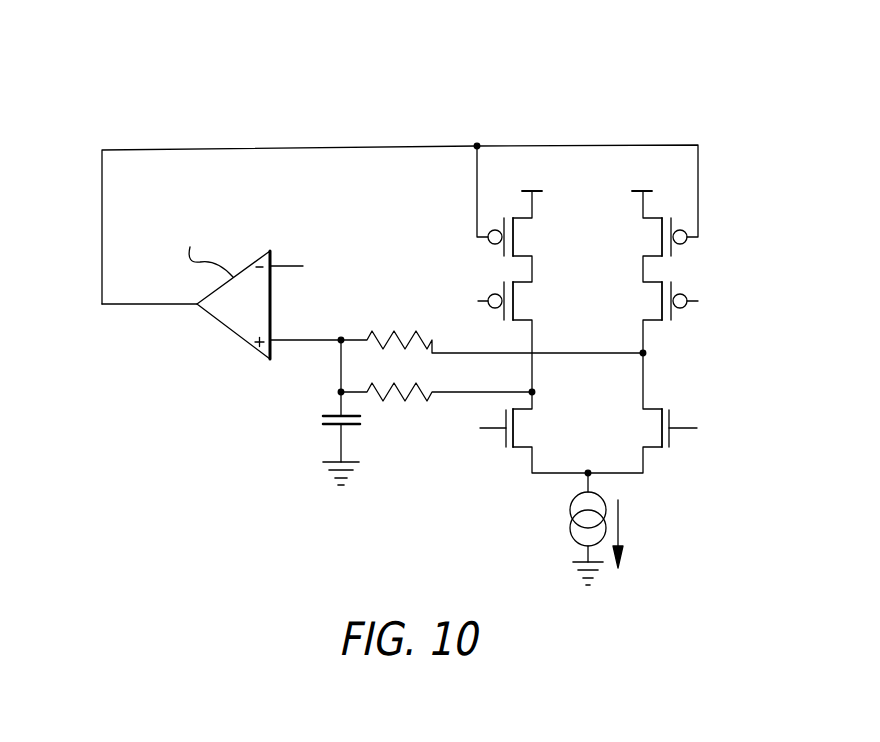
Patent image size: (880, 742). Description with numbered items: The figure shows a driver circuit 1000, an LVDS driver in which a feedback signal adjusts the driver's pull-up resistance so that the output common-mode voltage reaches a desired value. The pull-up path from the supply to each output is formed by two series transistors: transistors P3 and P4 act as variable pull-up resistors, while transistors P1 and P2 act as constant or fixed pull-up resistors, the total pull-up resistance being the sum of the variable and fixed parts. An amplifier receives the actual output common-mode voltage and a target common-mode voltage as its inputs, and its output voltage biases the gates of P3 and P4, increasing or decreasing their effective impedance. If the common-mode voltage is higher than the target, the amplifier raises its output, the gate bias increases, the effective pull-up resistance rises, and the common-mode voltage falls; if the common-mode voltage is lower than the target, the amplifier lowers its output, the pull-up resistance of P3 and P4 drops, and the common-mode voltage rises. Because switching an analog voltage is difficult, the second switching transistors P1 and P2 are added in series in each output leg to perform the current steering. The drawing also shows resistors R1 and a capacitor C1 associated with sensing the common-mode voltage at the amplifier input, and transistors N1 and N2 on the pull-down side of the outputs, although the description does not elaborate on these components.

The driver circuit 1000 is at (153, 88).
The resistor R1 is at (492, 353).
The capacitor C1 is at (325, 411).
The transistor P1 is at (520, 345).
The transistor P2 is at (658, 345).
The transistor P3 is at (520, 214).
The transistor P4 is at (653, 236).
The NMOS transistor N1 is at (571, 441).
The NMOS transistor N2 is at (658, 428).